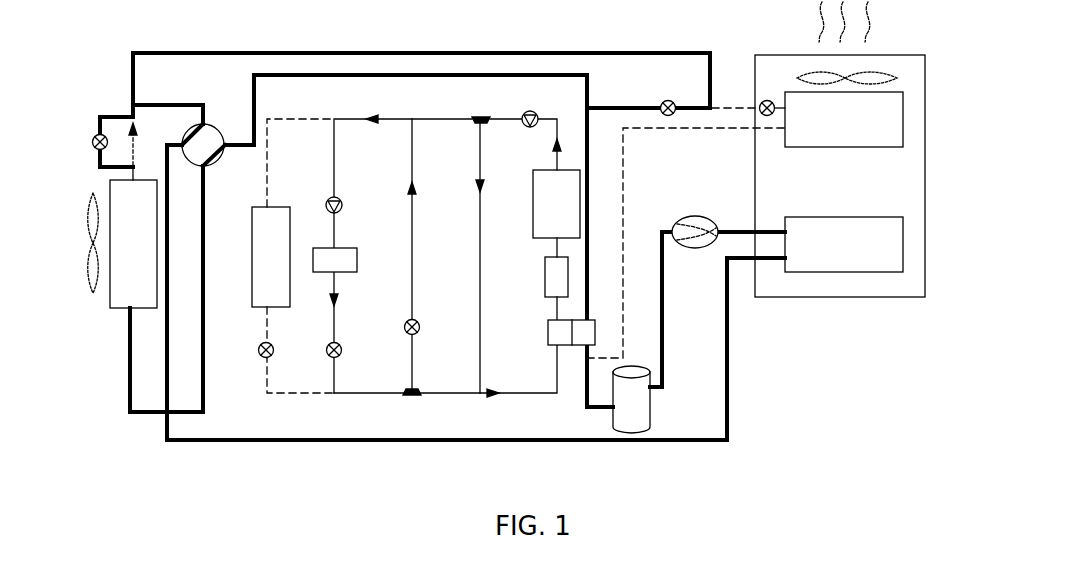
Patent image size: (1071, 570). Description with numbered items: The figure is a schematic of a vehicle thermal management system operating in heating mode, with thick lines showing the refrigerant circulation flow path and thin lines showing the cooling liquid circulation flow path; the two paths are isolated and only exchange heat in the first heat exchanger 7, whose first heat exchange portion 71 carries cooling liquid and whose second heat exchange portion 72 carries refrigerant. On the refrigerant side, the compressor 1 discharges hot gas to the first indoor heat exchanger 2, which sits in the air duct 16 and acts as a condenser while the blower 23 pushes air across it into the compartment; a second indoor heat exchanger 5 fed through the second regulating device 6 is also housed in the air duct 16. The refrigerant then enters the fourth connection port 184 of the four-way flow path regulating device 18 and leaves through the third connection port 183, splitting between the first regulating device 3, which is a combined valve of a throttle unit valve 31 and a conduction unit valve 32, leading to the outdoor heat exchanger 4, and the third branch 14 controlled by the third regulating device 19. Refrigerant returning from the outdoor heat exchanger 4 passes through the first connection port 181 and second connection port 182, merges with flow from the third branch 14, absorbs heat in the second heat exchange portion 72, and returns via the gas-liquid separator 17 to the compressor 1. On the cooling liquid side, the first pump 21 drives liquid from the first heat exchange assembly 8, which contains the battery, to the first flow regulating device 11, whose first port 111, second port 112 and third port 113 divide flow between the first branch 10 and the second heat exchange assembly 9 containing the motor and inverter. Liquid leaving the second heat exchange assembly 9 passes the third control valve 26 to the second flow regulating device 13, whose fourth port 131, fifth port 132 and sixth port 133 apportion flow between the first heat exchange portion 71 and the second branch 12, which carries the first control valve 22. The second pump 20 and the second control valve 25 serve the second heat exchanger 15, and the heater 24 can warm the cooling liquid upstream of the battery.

The compressor 1 is at (695, 232).
The first indoor heat exchanger 2 is at (844, 244).
The first regulating device 3 is at (92, 128).
The outdoor heat exchanger 4 is at (133, 244).
The second indoor heat exchanger 5 is at (844, 119).
The second regulating device 6 is at (767, 96).
The first heat exchanger 7 is at (571, 342).
The first heat exchange portion 71 is at (556, 322).
The second heat exchange portion 72 is at (588, 322).
The first heat exchange assembly 8 is at (556, 204).
The second heat exchange assembly 9 is at (335, 260).
The first branch 10 is at (483, 238).
The first flow regulating device 11 is at (482, 107).
The first port 111 is at (490, 122).
The second port 112 is at (478, 125).
The third port 113 is at (471, 119).
The second branch 12 is at (422, 238).
The second flow regulating device 13 is at (413, 402).
The fourth port 131 is at (406, 391).
The fifth port 132 is at (419, 392).
The sixth port 133 is at (414, 388).
The third branch 14 is at (590, 210).
The second heat exchanger 15 is at (271, 257).
The air duct 16 is at (928, 118).
The gas-liquid separator 17 is at (631, 399).
The flow path regulating device 18 is at (203, 145).
The first connection port 181 is at (204, 166).
The second connection port 182 is at (224, 143).
The third connection port 183 is at (205, 120).
The fourth connection port 184 is at (183, 142).
The third regulating device 19 is at (661, 99).
The second pump 20 is at (348, 205).
The first pump 21 is at (534, 107).
The first control valve 22 is at (425, 316).
The blower 23 is at (847, 68).
The heater 24 is at (544, 277).
The second control valve 25 is at (280, 350).
The third control valve 26 is at (348, 350).
The throttle unit valve 31 is at (100, 142).
The conduction unit valve 32 is at (145, 144).